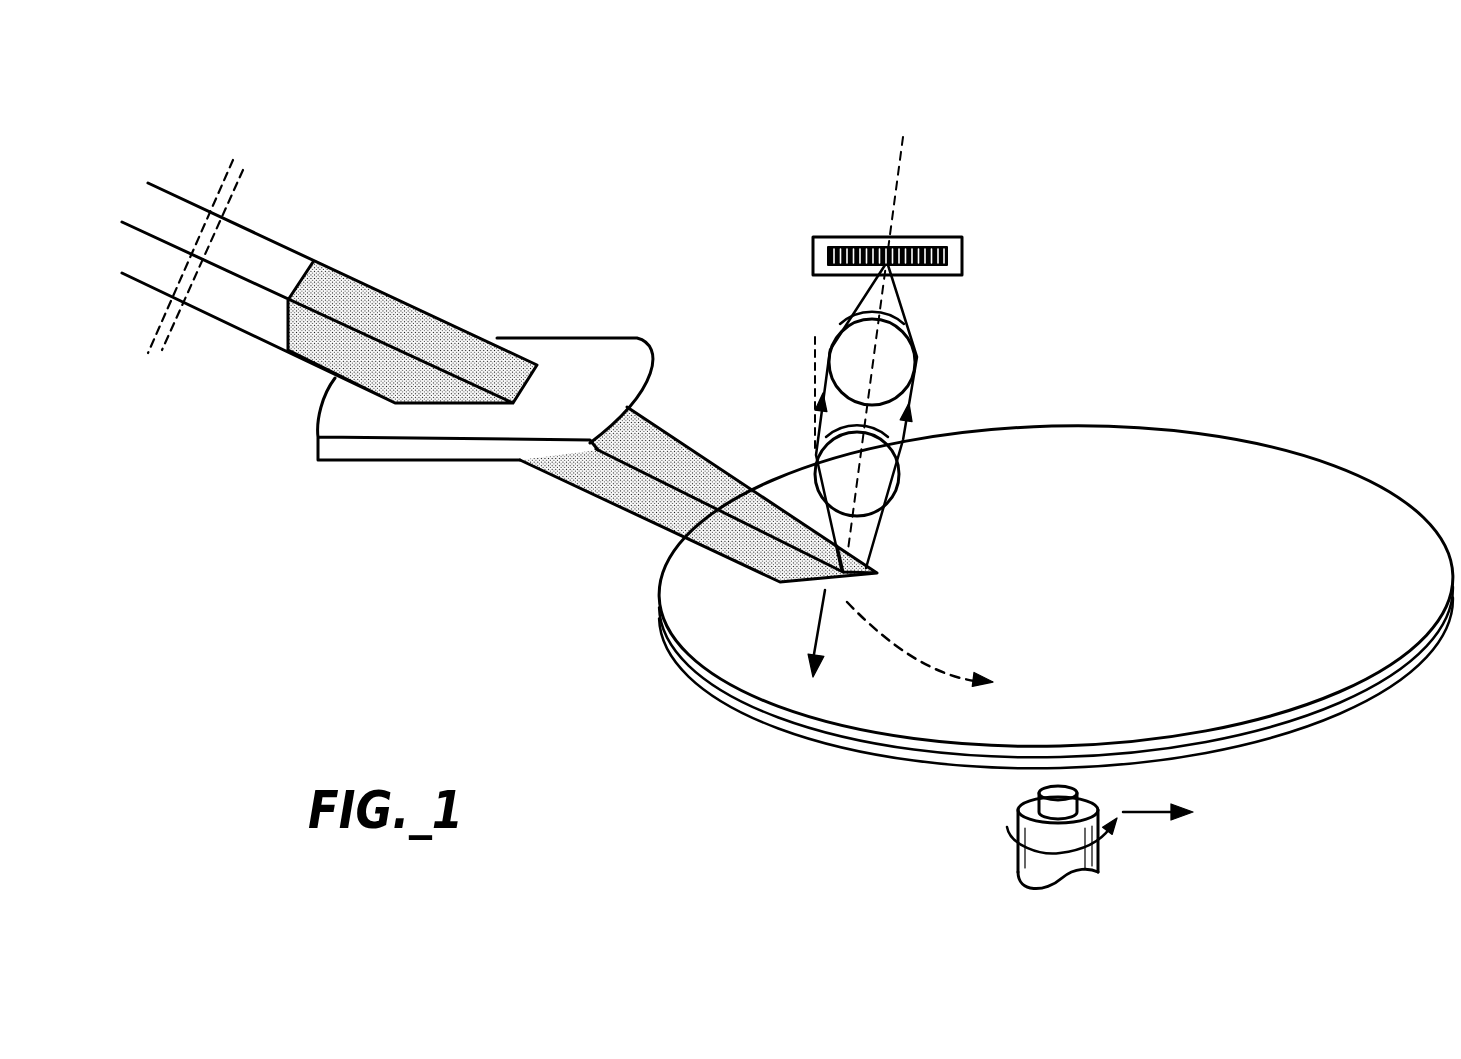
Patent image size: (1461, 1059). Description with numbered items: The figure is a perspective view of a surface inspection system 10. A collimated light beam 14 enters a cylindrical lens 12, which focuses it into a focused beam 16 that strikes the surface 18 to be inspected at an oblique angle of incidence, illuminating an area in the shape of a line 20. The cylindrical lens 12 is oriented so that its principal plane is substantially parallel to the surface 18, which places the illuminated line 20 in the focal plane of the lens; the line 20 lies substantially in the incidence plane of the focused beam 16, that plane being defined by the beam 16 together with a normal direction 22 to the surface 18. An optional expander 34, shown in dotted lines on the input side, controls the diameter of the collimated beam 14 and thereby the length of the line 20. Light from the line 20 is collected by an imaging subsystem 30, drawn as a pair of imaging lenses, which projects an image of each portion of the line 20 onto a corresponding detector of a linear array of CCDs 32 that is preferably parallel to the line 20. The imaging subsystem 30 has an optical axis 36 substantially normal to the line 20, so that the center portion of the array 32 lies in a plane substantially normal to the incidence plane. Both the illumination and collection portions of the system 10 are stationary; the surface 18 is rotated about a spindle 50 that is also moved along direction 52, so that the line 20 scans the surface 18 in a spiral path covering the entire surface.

The surface inspection system 10 is at (1192, 173).
The cylindrical lens 12 is at (583, 338).
The collimated light beam 14 is at (320, 370).
The focused beam 16 is at (637, 513).
The surface 18 is at (1340, 497).
The line 20 is at (717, 658).
The normal direction 22 is at (815, 358).
The imaging subsystem 30 is at (1010, 342).
The linear array of CCDs 32 is at (950, 237).
The expander 34 is at (233, 160).
The optical axis 36 is at (900, 158).
The spindle 50 is at (1018, 820).
The direction 52 is at (1147, 815).